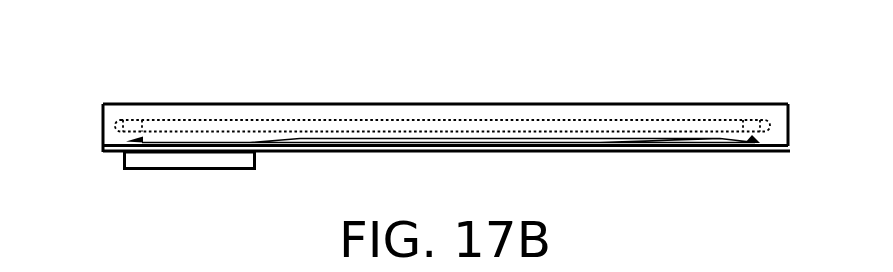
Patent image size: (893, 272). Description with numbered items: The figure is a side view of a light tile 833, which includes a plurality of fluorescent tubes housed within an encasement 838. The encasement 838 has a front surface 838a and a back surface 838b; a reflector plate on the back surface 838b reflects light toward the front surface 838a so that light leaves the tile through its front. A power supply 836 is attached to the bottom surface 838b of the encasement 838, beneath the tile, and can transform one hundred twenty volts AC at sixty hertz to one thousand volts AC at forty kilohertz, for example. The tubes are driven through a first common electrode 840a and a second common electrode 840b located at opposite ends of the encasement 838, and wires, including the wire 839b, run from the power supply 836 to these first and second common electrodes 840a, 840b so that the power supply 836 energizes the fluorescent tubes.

The light tile 833 is at (183, 84).
The power supply 836 is at (188, 162).
The encasement 838 is at (772, 135).
The front surface 838a is at (474, 104).
The back surface 838b is at (567, 148).
The wire 839b is at (137, 142).
The first common electrode 840a is at (137, 140).
The second common electrode 840b is at (763, 149).